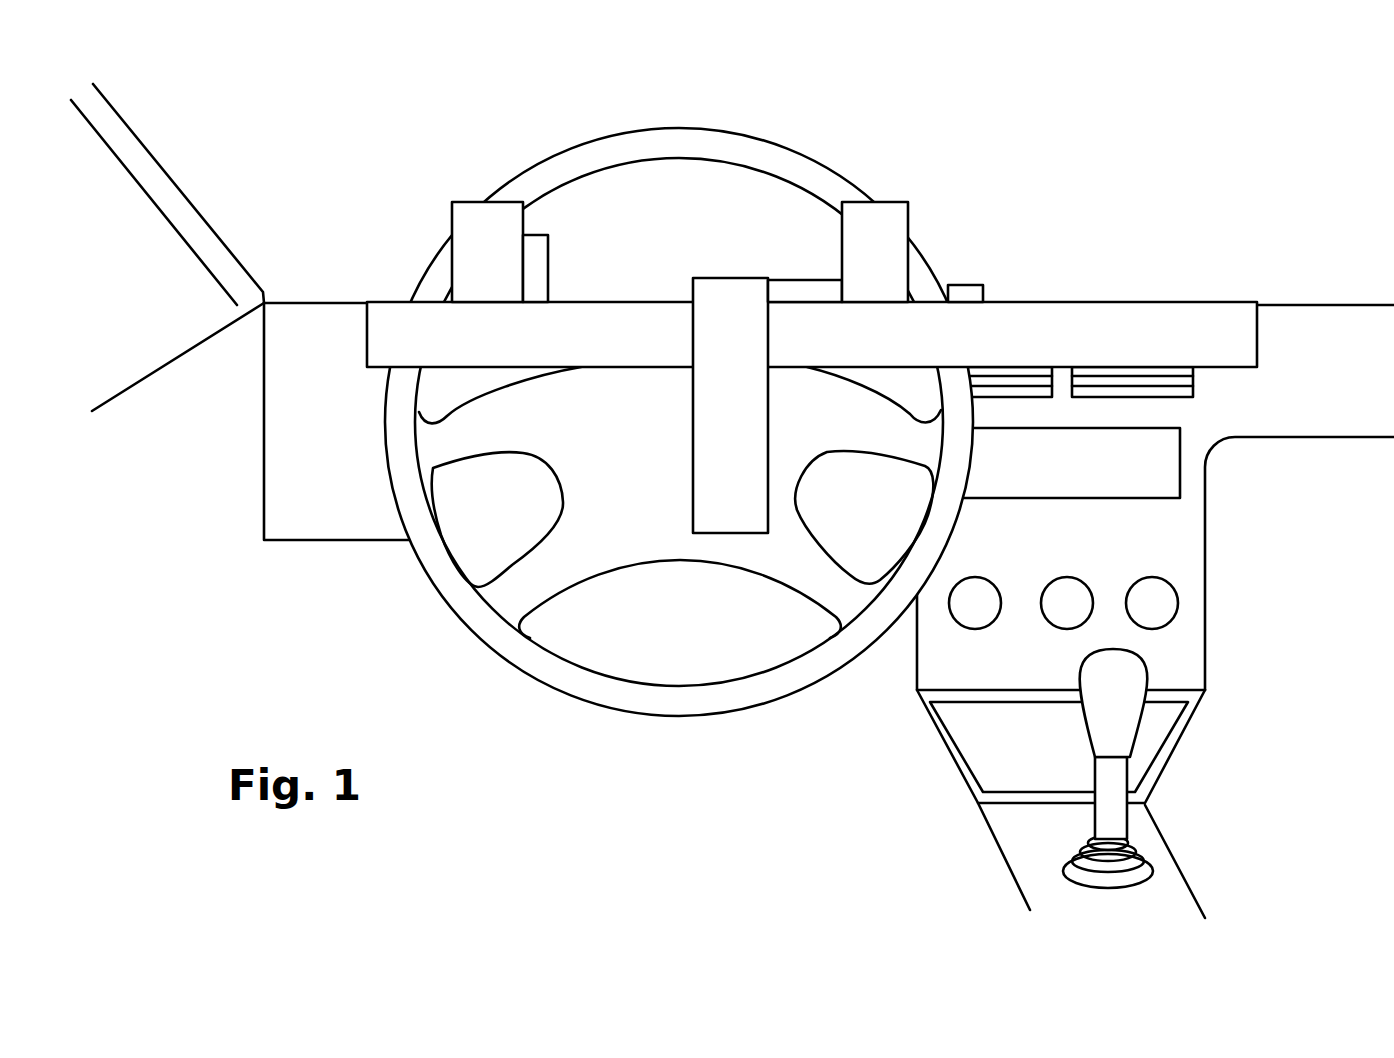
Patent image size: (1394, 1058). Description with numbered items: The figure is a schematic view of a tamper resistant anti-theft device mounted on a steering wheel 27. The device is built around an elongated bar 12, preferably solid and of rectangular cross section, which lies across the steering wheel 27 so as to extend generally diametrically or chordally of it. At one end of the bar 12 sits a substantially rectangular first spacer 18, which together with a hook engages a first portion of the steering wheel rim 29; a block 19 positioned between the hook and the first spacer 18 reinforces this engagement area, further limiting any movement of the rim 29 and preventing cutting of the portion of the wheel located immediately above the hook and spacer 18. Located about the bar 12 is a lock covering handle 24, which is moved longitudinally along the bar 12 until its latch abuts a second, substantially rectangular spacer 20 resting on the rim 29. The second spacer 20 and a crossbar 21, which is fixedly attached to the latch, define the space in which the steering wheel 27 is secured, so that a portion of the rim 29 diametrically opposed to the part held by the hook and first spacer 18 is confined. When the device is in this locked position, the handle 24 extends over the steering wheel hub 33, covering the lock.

The elongated bar 12 is at (1257, 345).
The first spacer 18 is at (548, 257).
The block 19 is at (490, 201).
The second spacer 20 is at (985, 287).
The crossbar 21 is at (890, 201).
The lock covering handle 24 is at (693, 430).
The steering wheel 27 is at (617, 718).
The steering wheel rim 29 is at (810, 685).
The steering wheel hub 33 is at (640, 535).